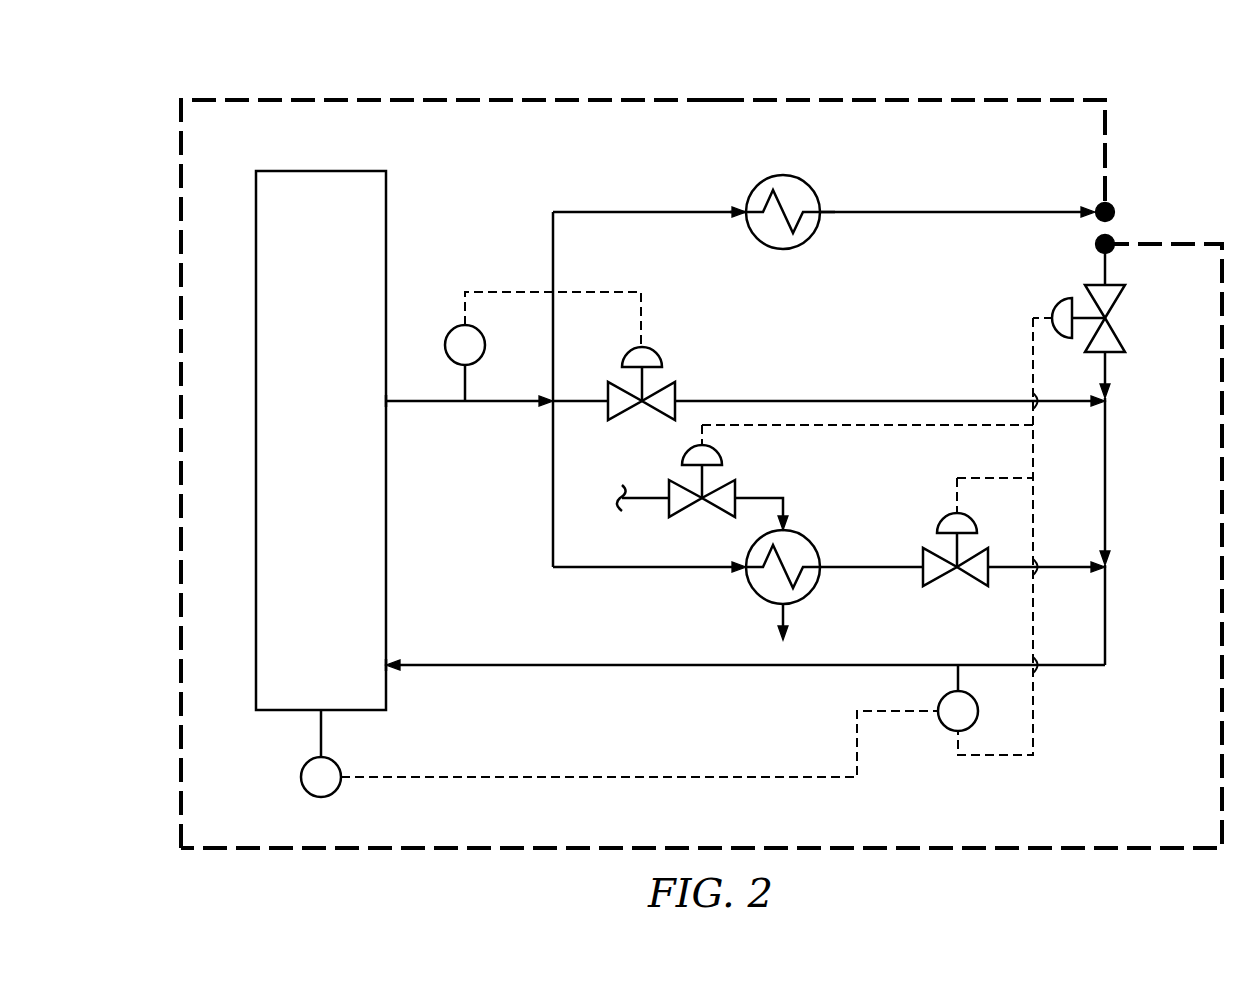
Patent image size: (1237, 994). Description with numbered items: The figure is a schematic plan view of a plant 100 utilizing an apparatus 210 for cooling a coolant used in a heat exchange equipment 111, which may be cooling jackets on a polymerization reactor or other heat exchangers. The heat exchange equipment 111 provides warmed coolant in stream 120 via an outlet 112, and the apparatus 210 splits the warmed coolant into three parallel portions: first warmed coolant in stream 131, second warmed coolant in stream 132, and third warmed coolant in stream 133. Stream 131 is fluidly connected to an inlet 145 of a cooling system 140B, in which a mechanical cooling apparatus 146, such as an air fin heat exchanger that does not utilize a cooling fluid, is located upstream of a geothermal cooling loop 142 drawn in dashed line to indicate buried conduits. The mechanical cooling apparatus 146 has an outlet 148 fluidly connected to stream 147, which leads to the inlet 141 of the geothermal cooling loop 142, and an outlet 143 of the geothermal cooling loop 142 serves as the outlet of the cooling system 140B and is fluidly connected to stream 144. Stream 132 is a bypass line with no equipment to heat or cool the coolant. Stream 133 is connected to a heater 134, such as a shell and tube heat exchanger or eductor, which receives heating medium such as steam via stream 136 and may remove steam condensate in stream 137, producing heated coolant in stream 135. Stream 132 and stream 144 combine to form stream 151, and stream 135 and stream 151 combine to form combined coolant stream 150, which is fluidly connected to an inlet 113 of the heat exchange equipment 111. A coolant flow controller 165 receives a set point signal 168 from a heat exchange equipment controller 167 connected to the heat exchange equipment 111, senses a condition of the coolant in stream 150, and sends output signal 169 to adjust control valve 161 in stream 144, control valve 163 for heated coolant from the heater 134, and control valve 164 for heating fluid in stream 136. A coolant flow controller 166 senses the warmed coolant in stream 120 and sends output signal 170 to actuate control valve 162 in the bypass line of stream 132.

The plant 100 is at (1082, 54).
The apparatus 210 is at (406, 110).
The geothermal cooling loop 142 is at (713, 101).
The cooling system 140B is at (1122, 136).
The heat exchange equipment 111 is at (321, 440).
The outlet 112 is at (404, 425).
The inlet 113 is at (404, 682).
The stream 120 is at (502, 403).
The stream 131 is at (618, 210).
The stream 132 is at (760, 399).
The stream 133 is at (610, 569).
The heater 134 is at (812, 592).
The stream 135 is at (867, 565).
The stream 136 is at (645, 500).
The stream 137 is at (776, 610).
The inlet 141 is at (1115, 212).
The outlet 143 is at (1095, 244).
The stream 144 is at (1107, 362).
The inlet 145 is at (740, 205).
The mechanical cooling apparatus 146 is at (808, 178).
The stream 147 is at (896, 216).
The outlet 148 is at (826, 206).
The combined coolant stream 150 is at (538, 663).
The stream 151 is at (1107, 485).
The control valve 161 is at (1117, 312).
The control valve 162 is at (645, 414).
The control valve 163 is at (962, 580).
The control valve 164 is at (738, 481).
The coolant flow controller 165 is at (940, 700).
The coolant flow controller 166 is at (452, 330).
The heat exchange equipment controller 167 is at (300, 777).
The set point signal 168 is at (573, 775).
The output signal 169 is at (1030, 612).
The output signal 170 is at (590, 296).